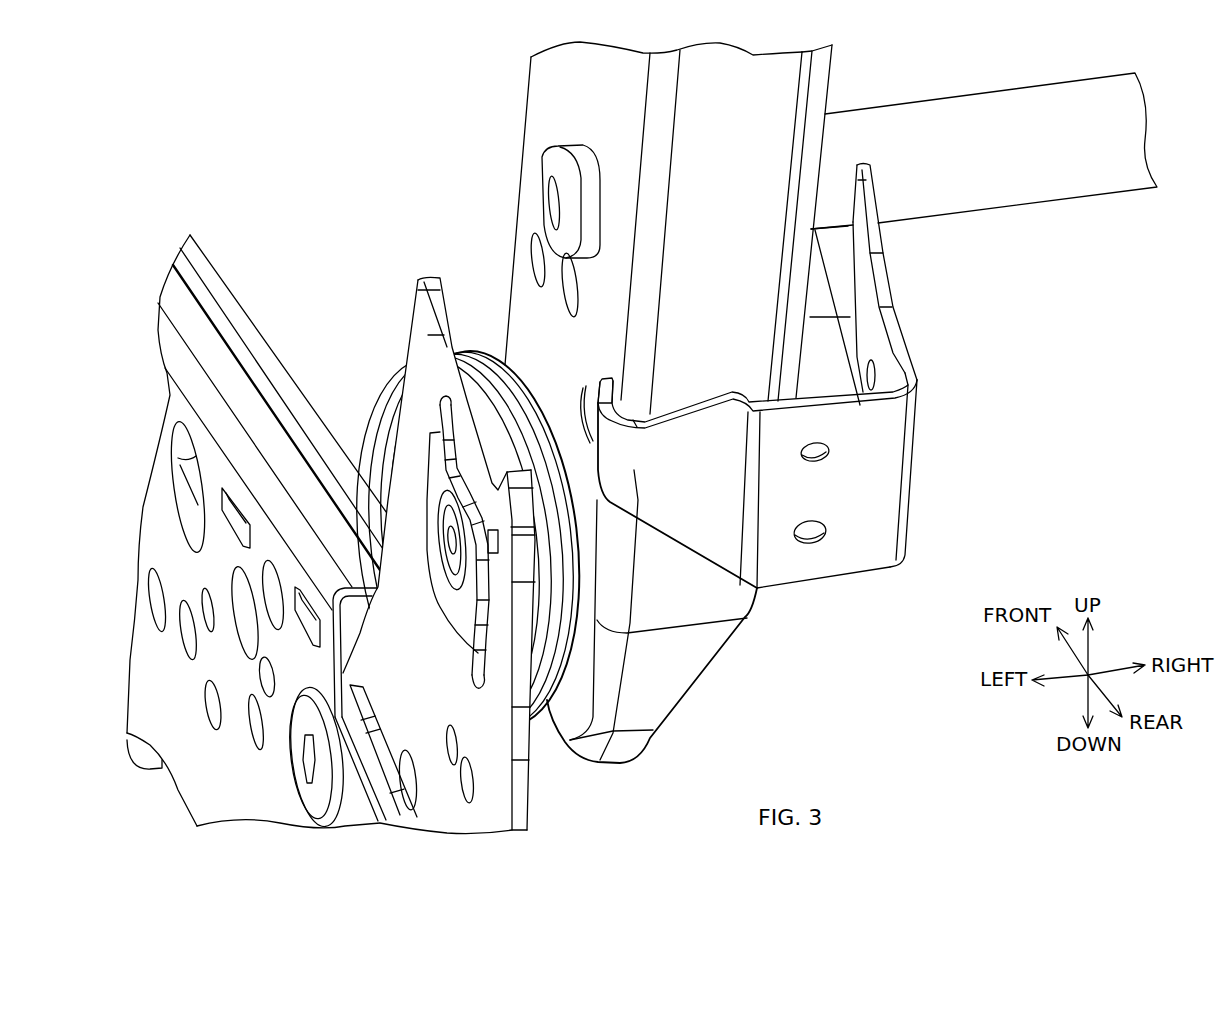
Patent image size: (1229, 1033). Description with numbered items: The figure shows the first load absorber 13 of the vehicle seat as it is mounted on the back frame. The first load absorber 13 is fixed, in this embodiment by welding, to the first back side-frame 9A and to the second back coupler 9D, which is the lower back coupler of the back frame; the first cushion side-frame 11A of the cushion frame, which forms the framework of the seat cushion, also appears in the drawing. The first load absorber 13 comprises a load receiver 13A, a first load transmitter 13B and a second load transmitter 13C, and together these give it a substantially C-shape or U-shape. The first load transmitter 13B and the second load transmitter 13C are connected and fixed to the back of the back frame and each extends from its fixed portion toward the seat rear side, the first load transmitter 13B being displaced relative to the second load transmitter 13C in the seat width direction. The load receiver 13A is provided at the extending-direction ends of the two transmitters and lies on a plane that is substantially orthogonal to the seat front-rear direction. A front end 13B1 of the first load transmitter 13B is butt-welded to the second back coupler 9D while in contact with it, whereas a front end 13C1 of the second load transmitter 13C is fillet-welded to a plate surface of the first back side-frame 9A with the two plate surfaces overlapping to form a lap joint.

The first back side-frame 9A is at (527, 107).
The second back coupler 9D is at (1020, 82).
The first cushion side-frame 11A is at (227, 327).
The first load absorber 13 is at (743, 464).
The load receiver 13A is at (849, 553).
The first load transmitter 13B is at (812, 366).
The front end of the first load transmitter 13B1 is at (860, 222).
The second load transmitter 13C is at (608, 508).
The front end of the second load transmitter 13C1 is at (598, 381).